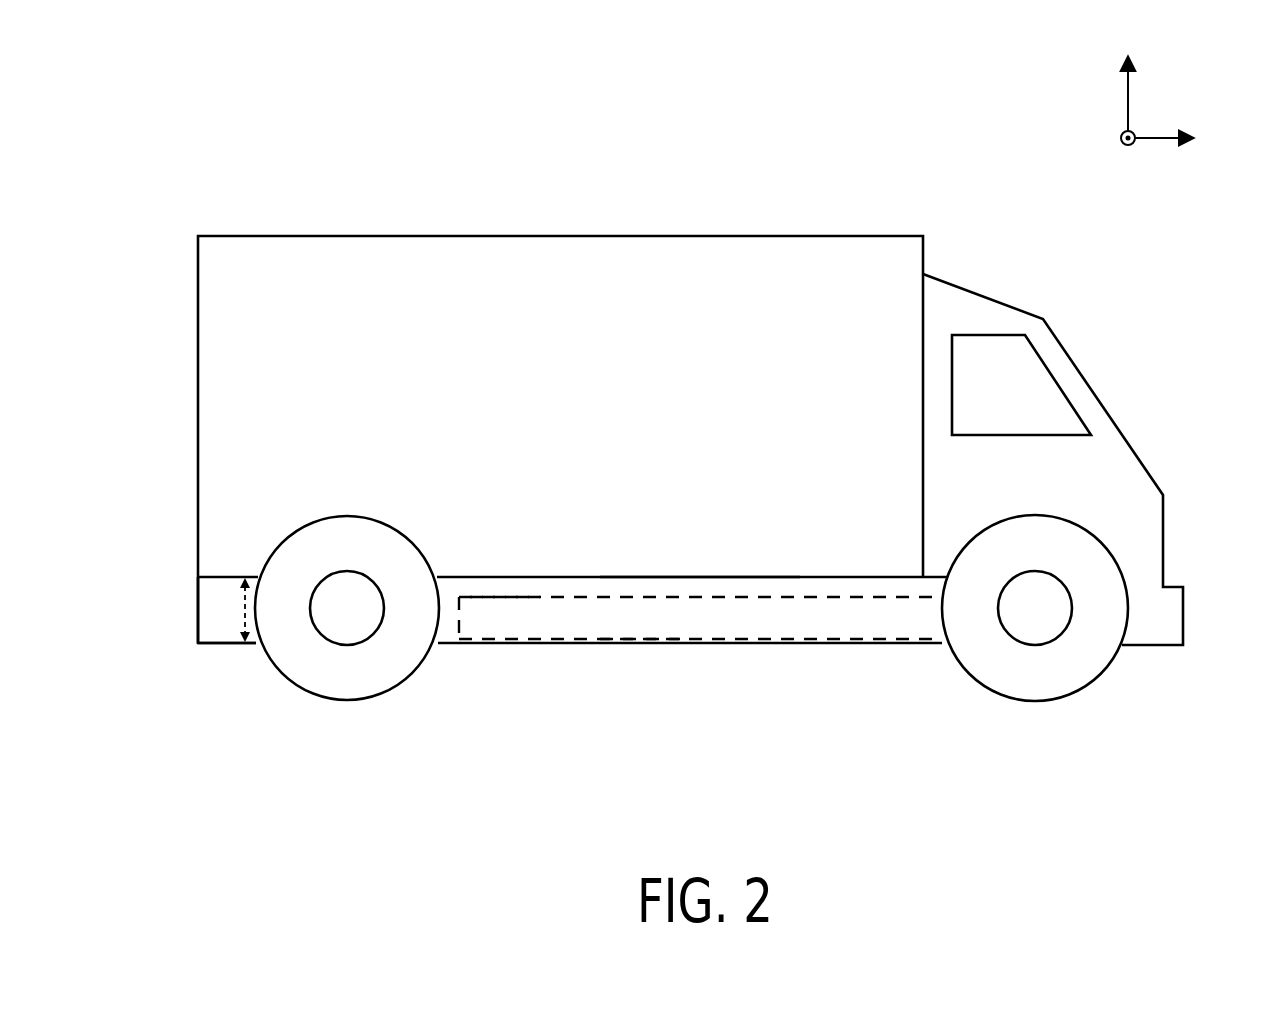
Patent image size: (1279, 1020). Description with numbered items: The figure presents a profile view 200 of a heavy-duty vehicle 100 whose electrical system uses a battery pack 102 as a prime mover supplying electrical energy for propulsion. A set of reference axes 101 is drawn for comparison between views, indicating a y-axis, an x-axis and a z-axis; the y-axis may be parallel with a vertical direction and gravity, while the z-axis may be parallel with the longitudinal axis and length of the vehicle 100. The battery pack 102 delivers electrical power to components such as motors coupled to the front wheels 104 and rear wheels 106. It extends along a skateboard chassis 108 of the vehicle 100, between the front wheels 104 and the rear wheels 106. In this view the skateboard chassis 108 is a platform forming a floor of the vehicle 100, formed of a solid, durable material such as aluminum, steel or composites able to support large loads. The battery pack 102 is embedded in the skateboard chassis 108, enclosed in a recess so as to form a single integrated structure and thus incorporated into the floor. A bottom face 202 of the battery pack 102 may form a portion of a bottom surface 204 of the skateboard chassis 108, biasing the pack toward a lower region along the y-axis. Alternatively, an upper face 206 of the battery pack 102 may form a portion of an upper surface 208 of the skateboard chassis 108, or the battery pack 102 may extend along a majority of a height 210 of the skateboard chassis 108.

The heavy-duty vehicle 100 is at (312, 178).
The reference axes 101 is at (1202, 72).
The battery pack 102 is at (588, 593).
The front wheels 104 is at (1052, 692).
The rear wheels 106 is at (356, 668).
The skateboard chassis 108 is at (769, 570).
The profile view 200 is at (135, 94).
The bottom face 202 is at (638, 643).
The bottom surface 204 is at (214, 645).
The upper face 206 is at (500, 597).
The upper surface 208 is at (711, 576).
The height 210 is at (245, 617).